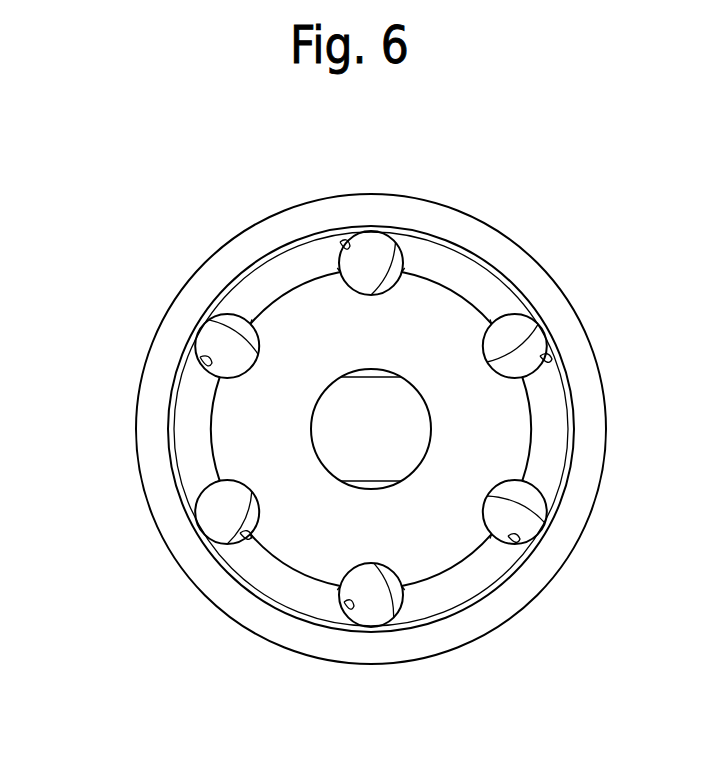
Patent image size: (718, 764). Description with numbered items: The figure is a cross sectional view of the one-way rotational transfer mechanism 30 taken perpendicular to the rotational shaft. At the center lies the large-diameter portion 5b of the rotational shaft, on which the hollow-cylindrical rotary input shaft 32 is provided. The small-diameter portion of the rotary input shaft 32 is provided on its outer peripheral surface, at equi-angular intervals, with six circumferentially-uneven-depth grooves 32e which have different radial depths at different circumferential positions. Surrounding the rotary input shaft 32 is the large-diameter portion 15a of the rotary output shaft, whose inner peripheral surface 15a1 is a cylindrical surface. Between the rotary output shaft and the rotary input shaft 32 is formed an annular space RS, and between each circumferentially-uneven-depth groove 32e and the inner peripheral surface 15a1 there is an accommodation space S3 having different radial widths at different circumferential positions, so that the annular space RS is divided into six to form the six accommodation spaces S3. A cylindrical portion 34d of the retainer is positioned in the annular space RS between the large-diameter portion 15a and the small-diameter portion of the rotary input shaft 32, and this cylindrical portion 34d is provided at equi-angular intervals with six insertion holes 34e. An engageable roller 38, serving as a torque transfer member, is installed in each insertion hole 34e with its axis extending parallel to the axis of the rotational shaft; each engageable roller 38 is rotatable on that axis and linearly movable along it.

The one-way rotational transfer mechanism 30 is at (77, 250).
The annular space RS is at (268, 273).
The accommodation space S3 is at (252, 320).
The large-diameter portion 5b is at (392, 403).
The large-diameter portion 15a is at (493, 228).
The inner peripheral surface 15a1 is at (510, 280).
The rotary input shaft 32 is at (497, 588).
The circumferentially-uneven-depth groove 32e is at (258, 353).
The cylindrical portion 34d is at (556, 455).
The insertion hole 34e is at (200, 353).
The engageable roller 38 is at (207, 342).